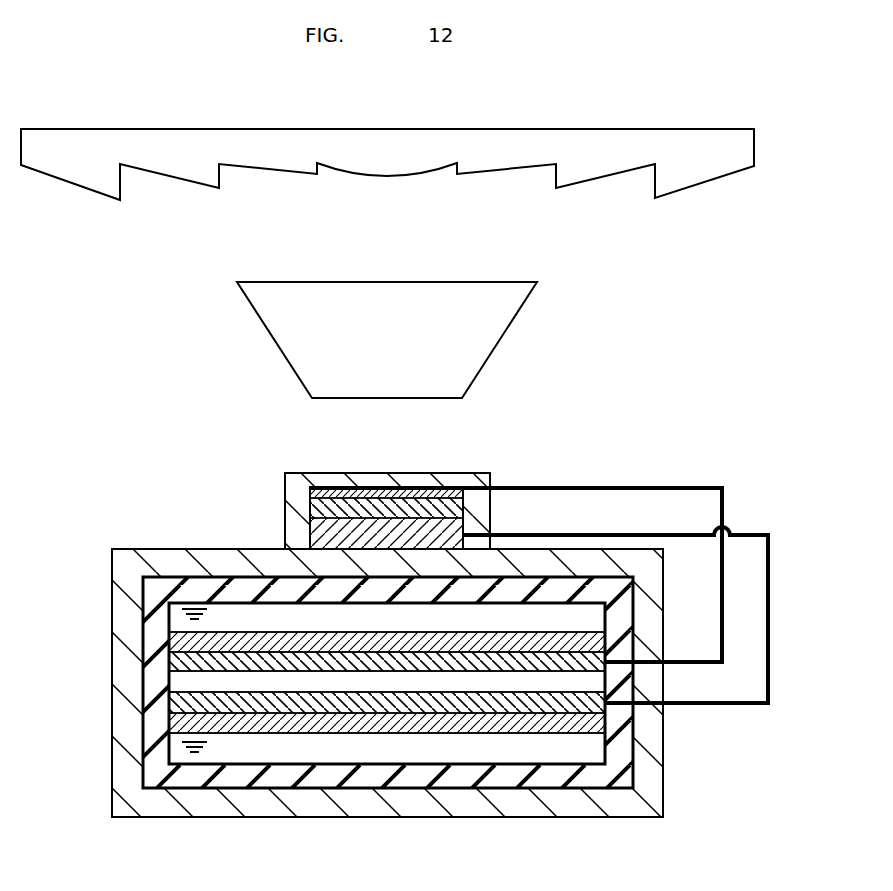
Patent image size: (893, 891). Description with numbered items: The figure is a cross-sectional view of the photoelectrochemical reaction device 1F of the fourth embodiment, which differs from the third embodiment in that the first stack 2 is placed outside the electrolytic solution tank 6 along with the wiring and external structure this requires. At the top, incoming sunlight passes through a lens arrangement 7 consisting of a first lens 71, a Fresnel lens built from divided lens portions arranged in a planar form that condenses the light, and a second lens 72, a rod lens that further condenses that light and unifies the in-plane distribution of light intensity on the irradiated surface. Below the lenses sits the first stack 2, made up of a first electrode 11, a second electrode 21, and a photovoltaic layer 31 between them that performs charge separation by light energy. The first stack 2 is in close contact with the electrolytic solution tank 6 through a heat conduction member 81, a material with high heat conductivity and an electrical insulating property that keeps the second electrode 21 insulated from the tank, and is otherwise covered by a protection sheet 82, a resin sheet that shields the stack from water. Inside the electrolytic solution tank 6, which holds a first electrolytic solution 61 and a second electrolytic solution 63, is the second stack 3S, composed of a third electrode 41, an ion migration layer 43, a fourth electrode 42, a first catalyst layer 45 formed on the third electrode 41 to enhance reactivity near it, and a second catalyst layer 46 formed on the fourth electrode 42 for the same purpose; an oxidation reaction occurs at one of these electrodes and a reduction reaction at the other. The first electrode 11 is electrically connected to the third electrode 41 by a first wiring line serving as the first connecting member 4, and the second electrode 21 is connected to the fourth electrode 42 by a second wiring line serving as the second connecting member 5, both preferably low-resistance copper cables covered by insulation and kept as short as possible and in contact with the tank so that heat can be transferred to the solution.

The photoelectrochemical reaction device 1F is at (663, 112).
The lens unit 7 is at (150, 125).
The first lens 71 is at (754, 143).
The second lens 72 is at (500, 345).
The protection sheet 82 is at (333, 480).
The first stack 2 is at (222, 486).
The first electrode 11 is at (317, 491).
The photovoltaic layer 31 is at (323, 513).
The second electrode 21 is at (325, 537).
The first connecting member 4 is at (724, 508).
The second connecting member 5 is at (770, 614).
The heat conduction member 81 is at (157, 564).
The electrolytic solution tank 6 is at (168, 775).
The first electrolytic solution 61 is at (183, 611).
The second stack 3S is at (52, 630).
The first catalyst layer 45 is at (188, 647).
The third electrode 41 is at (187, 660).
The ion migration layer 43 is at (187, 684).
The fourth electrode 42 is at (185, 706).
The second catalyst layer 46 is at (187, 722).
The second electrolytic solution 63 is at (180, 750).